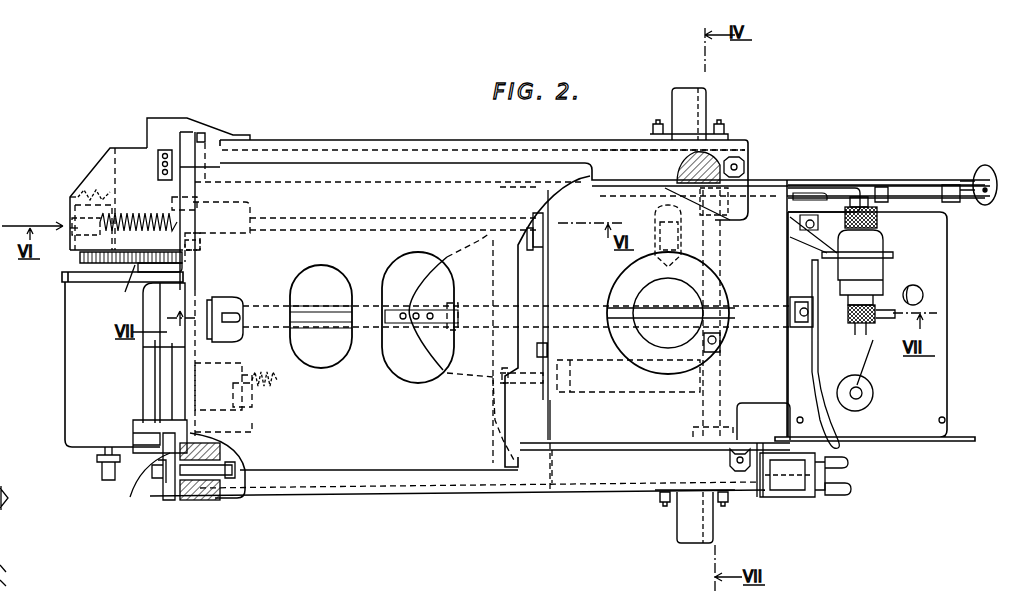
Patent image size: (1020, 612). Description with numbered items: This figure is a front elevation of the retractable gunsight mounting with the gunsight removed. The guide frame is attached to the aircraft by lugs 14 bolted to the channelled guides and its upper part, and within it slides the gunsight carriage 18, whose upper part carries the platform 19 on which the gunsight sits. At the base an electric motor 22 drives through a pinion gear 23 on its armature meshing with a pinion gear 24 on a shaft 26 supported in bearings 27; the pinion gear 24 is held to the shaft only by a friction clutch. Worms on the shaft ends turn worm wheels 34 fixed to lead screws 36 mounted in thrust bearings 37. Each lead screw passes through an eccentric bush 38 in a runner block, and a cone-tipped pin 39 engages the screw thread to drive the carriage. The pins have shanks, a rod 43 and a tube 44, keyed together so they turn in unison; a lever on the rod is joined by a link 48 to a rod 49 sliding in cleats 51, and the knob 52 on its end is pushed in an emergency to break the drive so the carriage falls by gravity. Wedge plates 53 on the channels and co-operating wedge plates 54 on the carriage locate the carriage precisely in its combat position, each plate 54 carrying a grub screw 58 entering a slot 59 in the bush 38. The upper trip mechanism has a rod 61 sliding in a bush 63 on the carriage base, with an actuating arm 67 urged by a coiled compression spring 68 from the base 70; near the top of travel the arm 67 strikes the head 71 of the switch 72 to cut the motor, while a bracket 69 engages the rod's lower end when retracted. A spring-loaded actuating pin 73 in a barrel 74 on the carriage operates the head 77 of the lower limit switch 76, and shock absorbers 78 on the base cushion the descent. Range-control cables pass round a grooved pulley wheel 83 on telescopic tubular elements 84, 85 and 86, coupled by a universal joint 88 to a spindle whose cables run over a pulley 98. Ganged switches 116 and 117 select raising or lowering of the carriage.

The lug 14 is at (676, 90).
The gunsight carriage 18 is at (590, 430).
The platform 19 is at (927, 375).
The electric motor 22 is at (77, 367).
The pinion gear 23 is at (75, 258).
The pinion gear 24 is at (144, 285).
The shaft 26 is at (157, 375).
The bearing 27 is at (148, 485).
The worm wheel 34 is at (160, 152).
The lead screw 36 is at (233, 470).
The thrust bearing 37 is at (217, 495).
The eccentric bush 38 is at (720, 152).
The cone-tipped pin 39 is at (745, 165).
The rod 43 is at (717, 293).
The tube 44 is at (722, 340).
The link 48 is at (803, 193).
The rod 49 is at (905, 185).
The cleat 51 is at (882, 183).
The knob 52 is at (988, 165).
The wedge plate 53 is at (627, 180).
The wedge plate 54 is at (680, 172).
The grub screw 58 is at (713, 202).
The slot 59 is at (667, 183).
The rod 61 is at (372, 222).
The bush 63 is at (532, 243).
The actuating arm 67 is at (70, 225).
The coiled compression spring 68 is at (118, 215).
The bracket 69 is at (70, 200).
The base 70 is at (203, 247).
The head 71 is at (80, 185).
The switch 72 is at (133, 160).
The actuating pin 73 is at (460, 378).
The barrel 74 is at (623, 393).
The lower limit switch 76 is at (236, 435).
The head 77 is at (272, 380).
The shock absorber 78 is at (263, 207).
The grooved pulley wheel 83 is at (217, 294).
The tubular element 84 is at (310, 310).
The intermediate tubular element 85 is at (508, 305).
The tubular element 86 is at (668, 313).
The universal joint 88 is at (790, 322).
The pulley 98 is at (873, 393).
The ganged switch 116 is at (848, 462).
The ganged switch 117 is at (827, 493).